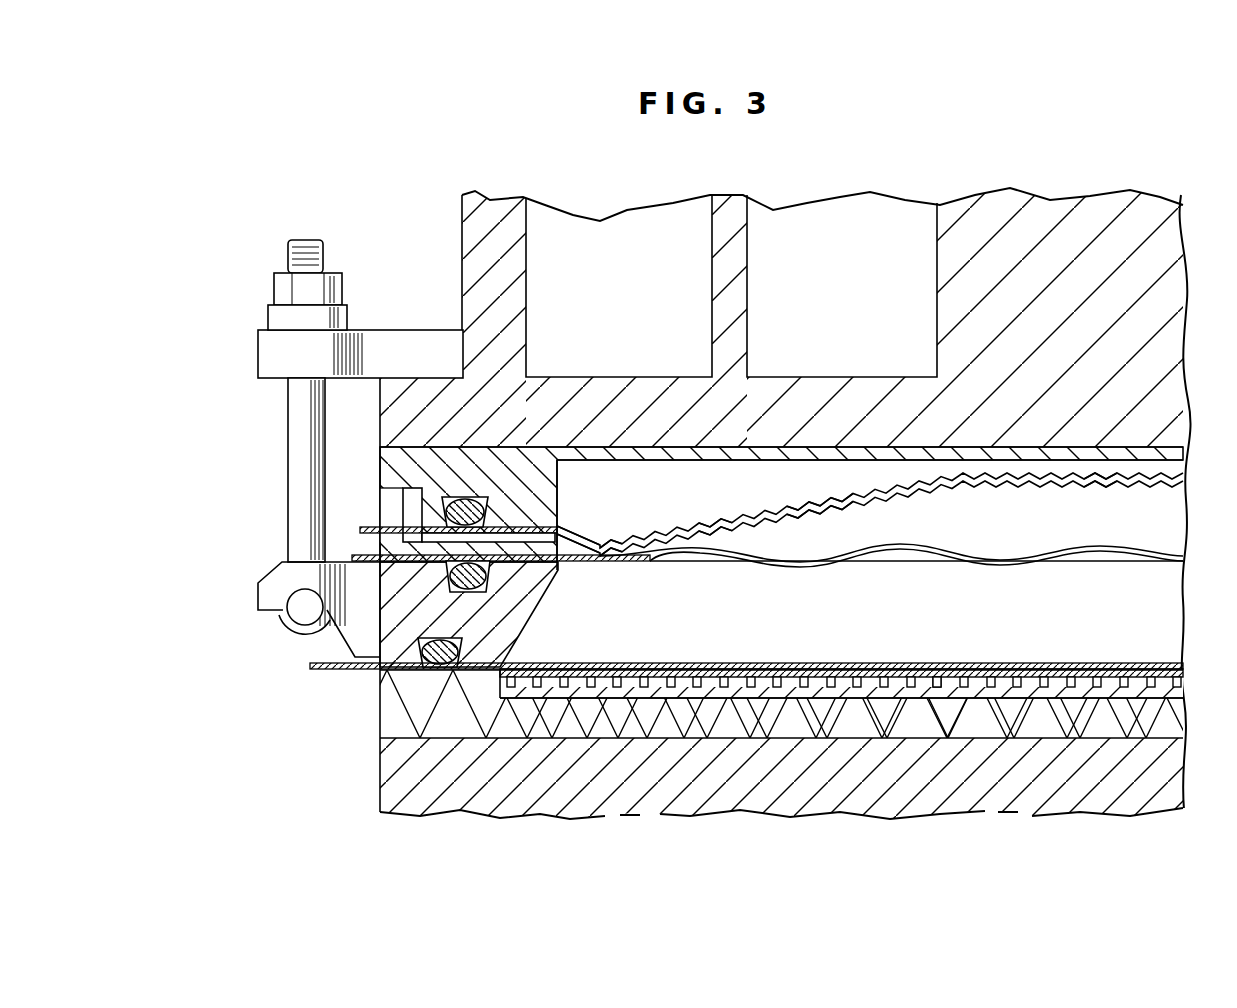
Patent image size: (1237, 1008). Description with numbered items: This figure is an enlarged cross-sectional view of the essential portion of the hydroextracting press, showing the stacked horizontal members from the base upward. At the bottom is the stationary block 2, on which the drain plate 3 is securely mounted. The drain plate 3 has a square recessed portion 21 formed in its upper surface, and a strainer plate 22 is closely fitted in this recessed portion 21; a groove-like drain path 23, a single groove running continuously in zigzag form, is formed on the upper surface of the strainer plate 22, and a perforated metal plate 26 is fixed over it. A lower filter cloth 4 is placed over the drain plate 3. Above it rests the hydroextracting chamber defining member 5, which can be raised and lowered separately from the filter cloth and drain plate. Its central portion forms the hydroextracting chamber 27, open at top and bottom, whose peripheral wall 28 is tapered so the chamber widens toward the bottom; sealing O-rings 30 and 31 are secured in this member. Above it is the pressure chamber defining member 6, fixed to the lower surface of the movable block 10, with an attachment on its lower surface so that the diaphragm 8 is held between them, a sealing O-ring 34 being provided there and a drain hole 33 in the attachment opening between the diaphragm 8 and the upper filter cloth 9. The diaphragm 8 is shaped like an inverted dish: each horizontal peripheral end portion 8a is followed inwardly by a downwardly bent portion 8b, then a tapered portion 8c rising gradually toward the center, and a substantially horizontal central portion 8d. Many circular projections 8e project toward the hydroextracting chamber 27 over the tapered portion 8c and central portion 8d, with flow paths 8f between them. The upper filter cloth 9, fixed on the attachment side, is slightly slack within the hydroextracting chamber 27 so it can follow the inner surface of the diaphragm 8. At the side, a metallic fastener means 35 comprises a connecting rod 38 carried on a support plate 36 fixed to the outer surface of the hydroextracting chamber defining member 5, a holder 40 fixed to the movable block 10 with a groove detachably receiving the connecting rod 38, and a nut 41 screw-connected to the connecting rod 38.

The stationary block 2 is at (1152, 776).
The drain plate 3 is at (1155, 718).
The lower filter cloth 4 is at (812, 666).
The hydroextracting chamber defining member 5 is at (375, 616).
The pressure chamber defining member 6 is at (528, 462).
The diaphragm 8 is at (1105, 494).
The peripheral end portion 8a is at (560, 495).
The bent portion 8b is at (585, 545).
The tapered portion 8c is at (847, 500).
The central portion 8d is at (1104, 494).
The circular projections 8e is at (837, 510).
The flow paths 8f is at (730, 528).
The upper filter cloth 9 is at (925, 548).
The movable block 10 is at (718, 212).
The recessed portion 21 is at (950, 692).
The strainer plate 22 is at (635, 690).
The drain path 23 is at (673, 683).
The perforated metal plate 26 is at (540, 698).
The hydroextracting chamber 27 is at (1138, 617).
The peripheral wall 28 is at (525, 628).
The sealing O-ring 30 is at (490, 578).
The sealing O-ring 31 is at (440, 667).
The drain hole 33 is at (392, 540).
The sealing O-ring 34 is at (466, 497).
The metallic fastener means 35 is at (274, 432).
The support plate 36 is at (268, 592).
The connecting rod 38 is at (298, 477).
The holder 40 is at (275, 356).
The nut 41 is at (285, 290).